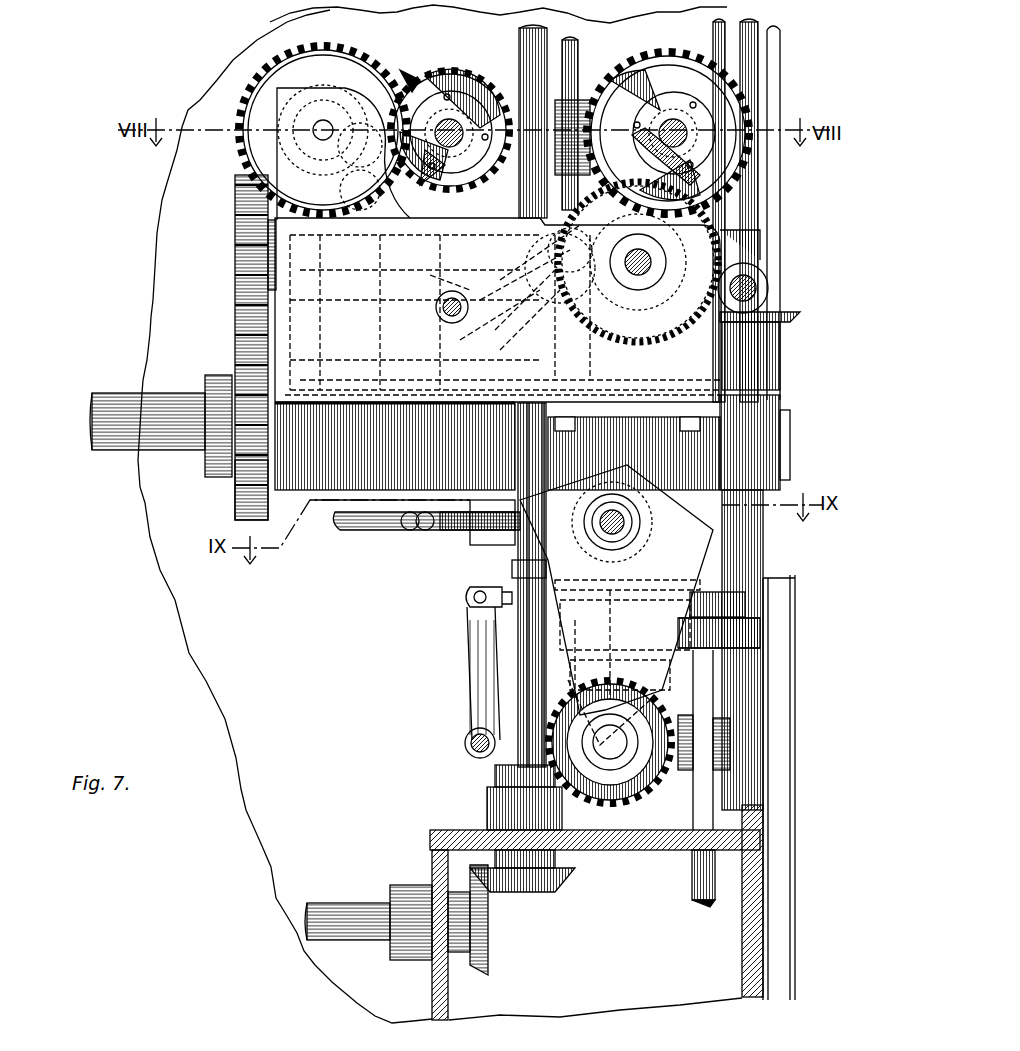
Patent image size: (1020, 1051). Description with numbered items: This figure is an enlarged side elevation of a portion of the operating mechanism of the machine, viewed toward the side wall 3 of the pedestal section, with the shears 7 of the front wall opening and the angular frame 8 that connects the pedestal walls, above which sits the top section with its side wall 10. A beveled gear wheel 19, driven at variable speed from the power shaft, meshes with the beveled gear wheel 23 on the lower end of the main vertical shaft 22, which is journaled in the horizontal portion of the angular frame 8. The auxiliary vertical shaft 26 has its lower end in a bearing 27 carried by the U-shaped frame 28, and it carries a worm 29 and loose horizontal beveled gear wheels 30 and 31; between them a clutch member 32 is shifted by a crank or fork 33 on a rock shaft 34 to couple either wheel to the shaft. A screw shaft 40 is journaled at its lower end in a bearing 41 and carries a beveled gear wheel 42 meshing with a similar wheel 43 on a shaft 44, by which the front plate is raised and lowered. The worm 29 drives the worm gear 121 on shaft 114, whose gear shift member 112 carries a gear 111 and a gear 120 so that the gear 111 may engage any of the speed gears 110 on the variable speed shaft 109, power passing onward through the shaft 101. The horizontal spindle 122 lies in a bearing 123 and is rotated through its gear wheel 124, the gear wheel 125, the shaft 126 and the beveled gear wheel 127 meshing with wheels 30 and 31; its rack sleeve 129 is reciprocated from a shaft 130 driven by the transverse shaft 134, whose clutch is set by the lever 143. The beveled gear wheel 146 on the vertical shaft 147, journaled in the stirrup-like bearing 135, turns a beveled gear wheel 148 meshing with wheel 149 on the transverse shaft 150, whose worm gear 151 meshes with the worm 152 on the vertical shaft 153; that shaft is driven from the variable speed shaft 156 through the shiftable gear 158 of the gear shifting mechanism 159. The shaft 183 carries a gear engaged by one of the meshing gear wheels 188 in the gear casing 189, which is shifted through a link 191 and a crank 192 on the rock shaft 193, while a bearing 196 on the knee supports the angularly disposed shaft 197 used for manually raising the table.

The side wall 3 is at (458, 811).
The shears 7 is at (790, 802).
The angular frame 8 is at (432, 838).
The side wall 10 is at (162, 192).
The beveled gear wheel 19 is at (488, 936).
The main vertical shaft 22 is at (518, 34).
The beveled gear wheel 23 is at (555, 890).
The auxiliary vertical shaft 26 is at (578, 54).
The bearing 27 is at (502, 383).
The U-shaped frame 28 is at (497, 310).
The worm 29 is at (582, 100).
The beveled gear wheel 30 is at (548, 237).
The beveled gear wheel 31 is at (566, 307).
The clutch member 32 is at (491, 323).
The crank or fork 33 is at (460, 285).
The rock shaft 34 is at (444, 307).
The screw shaft 40 is at (760, 64).
The bearing 41 is at (778, 340).
The beveled gear wheel 42 is at (790, 318).
The beveled gear wheel 43 is at (768, 283).
The shaft 44 is at (756, 290).
The shaft 101 is at (725, 45).
The variable speed shaft 109 is at (318, 133).
The speed gears 110 is at (252, 78).
The gear 111 is at (410, 80).
The gear shift member 112 is at (445, 168).
The shaft 114 is at (450, 118).
The gear 120 is at (457, 137).
The worm gear 121 is at (430, 128).
The horizontal spindle 122 is at (782, 442).
The bearing 123 is at (395, 446).
The gear wheel 124 is at (236, 514).
The gear wheel 125 is at (240, 228).
The shaft 126 is at (335, 242).
The beveled gear wheel 127 is at (520, 313).
The rack sleeve 129 is at (118, 448).
The shaft 130 is at (362, 530).
The transverse shaft 134 is at (618, 528).
The bearing 135 is at (634, 453).
The lever 143 is at (438, 530).
The beveled gear wheel 146 is at (540, 574).
The vertical shaft 147 is at (616, 590).
The beveled gear wheel 148 is at (609, 707).
The beveled gear wheel 149 is at (600, 780).
The transverse shaft 150 is at (610, 748).
The worm gear 151 is at (660, 796).
The worm 152 is at (730, 744).
The vertical shaft 153 is at (740, 547).
The variable speed shaft 156 is at (645, 275).
The shiftable gear 158 is at (618, 140).
The gear shifting mechanism 159 is at (705, 130).
The shaft 183 is at (700, 905).
The gear wheels 188 is at (760, 636).
The gear casing 189 is at (740, 620).
The link 191 is at (480, 610).
The crank 192 is at (470, 678).
The rock shaft 193 is at (466, 745).
The bearing 196 is at (748, 256).
The shaft 197 is at (600, 320).